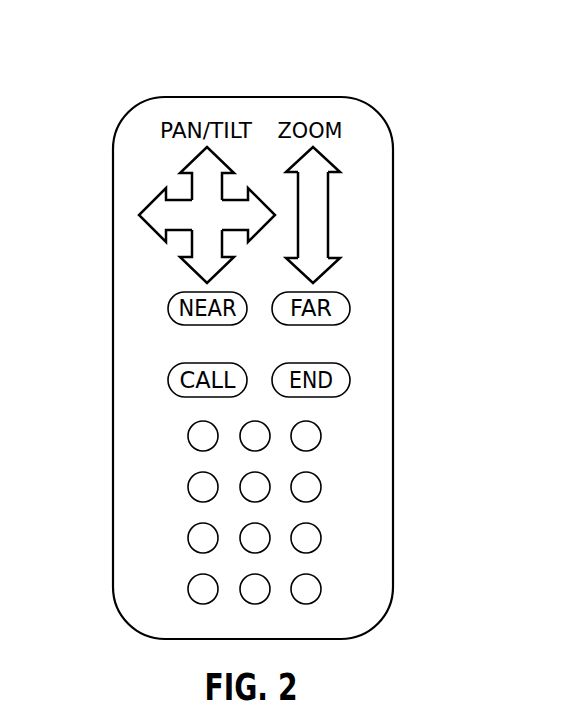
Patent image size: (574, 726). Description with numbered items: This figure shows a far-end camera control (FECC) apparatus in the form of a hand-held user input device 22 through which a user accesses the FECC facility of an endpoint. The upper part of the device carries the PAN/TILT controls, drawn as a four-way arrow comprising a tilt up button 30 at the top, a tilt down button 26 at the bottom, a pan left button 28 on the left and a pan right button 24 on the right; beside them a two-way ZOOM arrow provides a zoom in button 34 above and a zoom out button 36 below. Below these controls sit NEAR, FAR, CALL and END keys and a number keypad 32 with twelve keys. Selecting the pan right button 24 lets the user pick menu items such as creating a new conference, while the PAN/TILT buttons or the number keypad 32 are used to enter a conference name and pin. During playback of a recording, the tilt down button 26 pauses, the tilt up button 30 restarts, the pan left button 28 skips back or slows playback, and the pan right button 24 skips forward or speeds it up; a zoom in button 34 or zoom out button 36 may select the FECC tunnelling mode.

The user input device 22 is at (380, 70).
The pan right button 24 is at (255, 215).
The tilt down button 26 is at (198, 265).
The pan left button 28 is at (153, 211).
The tilt up button 30 is at (200, 163).
The number keypad 32 is at (323, 463).
The zoom in button 34 is at (318, 163).
The zoom out button 36 is at (318, 267).